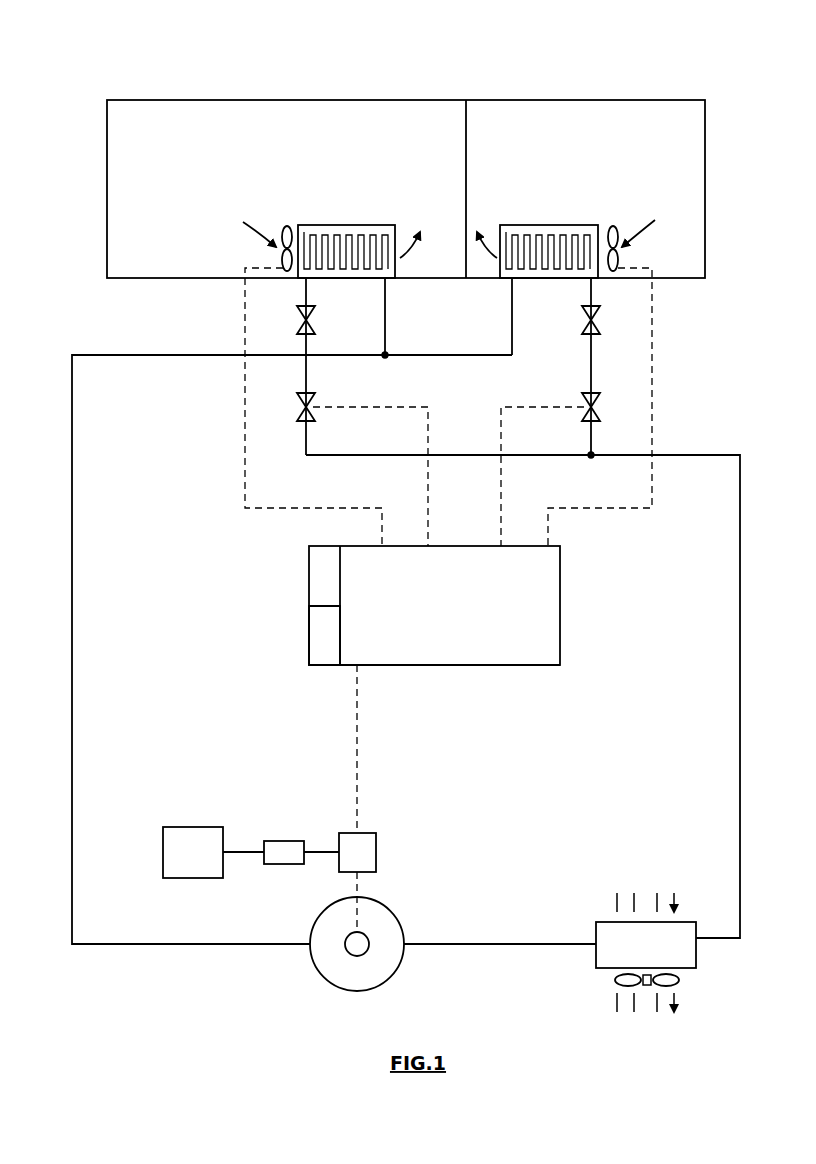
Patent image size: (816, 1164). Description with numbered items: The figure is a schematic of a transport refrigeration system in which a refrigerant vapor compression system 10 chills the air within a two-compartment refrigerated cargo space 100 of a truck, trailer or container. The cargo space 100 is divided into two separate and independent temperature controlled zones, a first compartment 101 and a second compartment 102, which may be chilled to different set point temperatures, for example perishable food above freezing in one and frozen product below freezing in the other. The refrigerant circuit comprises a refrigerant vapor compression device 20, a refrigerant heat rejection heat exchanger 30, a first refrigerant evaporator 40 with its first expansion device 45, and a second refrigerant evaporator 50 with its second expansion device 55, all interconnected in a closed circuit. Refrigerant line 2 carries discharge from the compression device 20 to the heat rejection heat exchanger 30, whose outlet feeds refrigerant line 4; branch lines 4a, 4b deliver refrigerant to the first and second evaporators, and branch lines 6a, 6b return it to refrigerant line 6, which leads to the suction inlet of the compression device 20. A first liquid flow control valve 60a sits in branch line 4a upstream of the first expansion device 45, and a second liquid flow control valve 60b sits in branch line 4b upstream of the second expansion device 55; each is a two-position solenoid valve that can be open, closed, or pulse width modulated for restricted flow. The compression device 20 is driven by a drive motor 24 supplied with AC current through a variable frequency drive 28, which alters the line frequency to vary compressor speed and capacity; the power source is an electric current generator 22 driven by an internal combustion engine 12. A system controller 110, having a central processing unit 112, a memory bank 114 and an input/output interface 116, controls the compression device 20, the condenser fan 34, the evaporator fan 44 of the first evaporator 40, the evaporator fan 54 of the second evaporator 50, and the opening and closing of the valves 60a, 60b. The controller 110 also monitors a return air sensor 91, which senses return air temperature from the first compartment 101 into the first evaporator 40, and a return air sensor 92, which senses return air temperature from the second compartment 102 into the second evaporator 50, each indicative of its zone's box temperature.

The refrigerant vapor compression system 10 is at (172, 50).
The refrigerated cargo space 100 is at (578, 100).
The first compartment 101 is at (567, 196).
The second compartment 102 is at (339, 189).
The first refrigerant evaporator 40 is at (527, 225).
The second refrigerant evaporator 50 is at (360, 225).
The evaporator fan 44 is at (613, 225).
The evaporator fan 54 is at (283, 225).
The return air sensor 91 is at (620, 264).
The return air sensor 92 is at (283, 272).
The first expansion device 45 is at (583, 320).
The second expansion device 55 is at (313, 321).
The first liquid flow control valve 60a is at (585, 400).
The second liquid flow control valve 60b is at (312, 404).
The branch line 4a is at (591, 372).
The branch line 4b is at (306, 380).
The branch line 6a is at (510, 313).
The branch line 6b is at (385, 305).
The refrigerant line 4 is at (740, 665).
The refrigerant line 6 is at (72, 677).
The refrigerant line 2 is at (470, 944).
The system controller 110 is at (560, 607).
The central processing unit 112 is at (448, 665).
The memory bank 114 is at (309, 583).
The input/output interface 116 is at (309, 645).
The internal combustion engine 12 is at (193, 827).
The electric current generator 22 is at (283, 841).
The variable frequency drive 28 is at (376, 852).
The refrigerant vapor compression device 20 is at (392, 977).
The drive motor 24 is at (348, 936).
The refrigerant heat rejection heat exchanger 30 is at (596, 960).
The condenser fan 34 is at (680, 982).